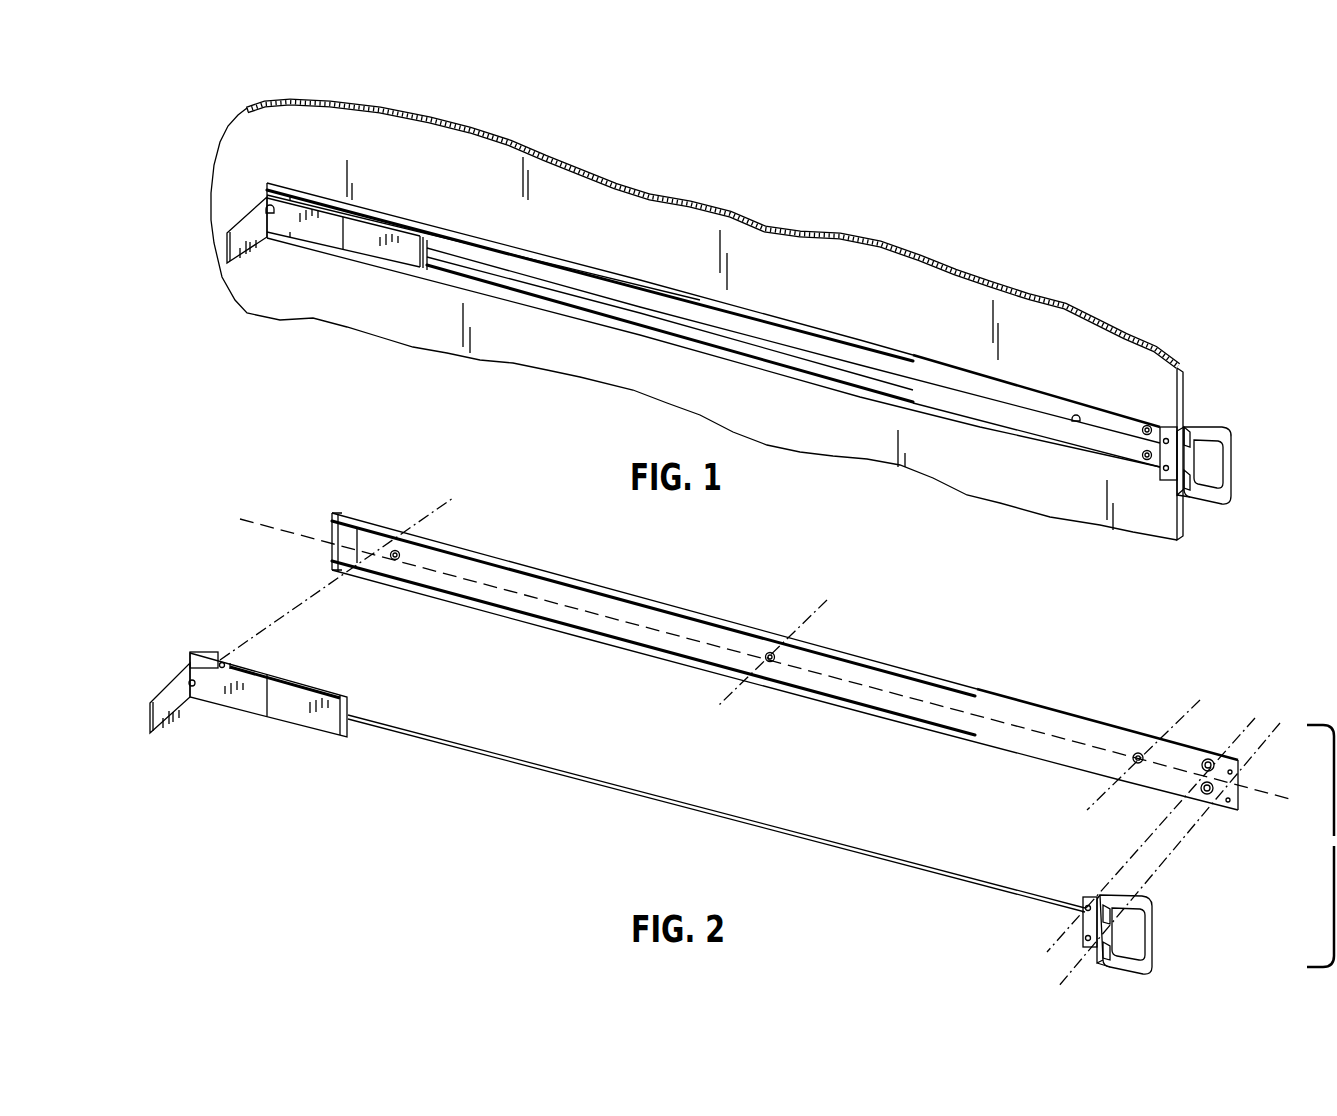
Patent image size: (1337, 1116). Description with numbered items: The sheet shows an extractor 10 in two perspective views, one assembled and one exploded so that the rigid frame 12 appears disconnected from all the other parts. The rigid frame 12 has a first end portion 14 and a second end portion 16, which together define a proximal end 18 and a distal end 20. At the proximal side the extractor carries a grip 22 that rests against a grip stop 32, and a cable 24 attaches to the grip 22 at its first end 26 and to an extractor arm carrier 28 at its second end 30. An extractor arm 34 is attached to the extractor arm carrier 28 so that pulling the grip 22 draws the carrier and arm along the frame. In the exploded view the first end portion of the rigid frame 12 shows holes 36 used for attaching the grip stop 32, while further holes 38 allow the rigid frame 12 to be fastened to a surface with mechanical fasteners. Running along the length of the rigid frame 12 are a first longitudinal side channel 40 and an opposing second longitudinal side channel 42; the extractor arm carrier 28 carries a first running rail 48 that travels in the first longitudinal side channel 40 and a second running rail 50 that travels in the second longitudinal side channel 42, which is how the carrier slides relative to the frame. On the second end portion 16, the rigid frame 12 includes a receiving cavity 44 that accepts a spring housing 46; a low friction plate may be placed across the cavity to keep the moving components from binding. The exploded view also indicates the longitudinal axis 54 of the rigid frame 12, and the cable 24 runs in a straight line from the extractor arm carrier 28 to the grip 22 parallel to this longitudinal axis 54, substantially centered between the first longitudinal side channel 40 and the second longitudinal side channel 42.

In FIG. 1, the extractor 10 is at (766, 182).
In FIG. 1, the rigid frame 12 is at (820, 298).
In FIG. 2, the rigid frame 12 is at (727, 610).
In FIG. 1, the first end portion 14 is at (1150, 403).
In FIG. 1, the second end portion 16 is at (305, 178).
In FIG. 2, the second end portion 16 is at (345, 506).
In FIG. 1, the proximal end 18 is at (1185, 425).
In FIG. 1, the distal end 20 is at (266, 210).
In FIG. 1, the grip 22 is at (1232, 463).
In FIG. 1, the cable 24 is at (1043, 420).
In FIG. 1, the first end 26 is at (1092, 440).
In FIG. 1, the extractor arm carrier 28 is at (383, 250).
In FIG. 2, the extractor arm carrier 28 is at (285, 710).
In FIG. 1, the second end 30 is at (430, 262).
In FIG. 1, the grip stop 32 is at (1165, 462).
In FIG. 2, the grip stop 32 is at (1083, 903).
In FIG. 1, the extractor arm 34 is at (238, 250).
In FIG. 2, the extractor arm 34 is at (170, 698).
In FIG. 2, the holes 36 is at (1229, 766).
In FIG. 2, the holes 38 is at (393, 560).
In FIG. 2, the first longitudinal side channel 40 is at (550, 576).
In FIG. 2, the second longitudinal side channel 42 is at (552, 628).
In FIG. 2, the receiving cavity 44 is at (332, 527).
In FIG. 2, the spring housing 46 is at (210, 657).
In FIG. 2, the first running rail 48 is at (307, 675).
In FIG. 2, the second running rail 50 is at (345, 737).
In FIG. 2, the longitudinal axis 54 is at (265, 522).